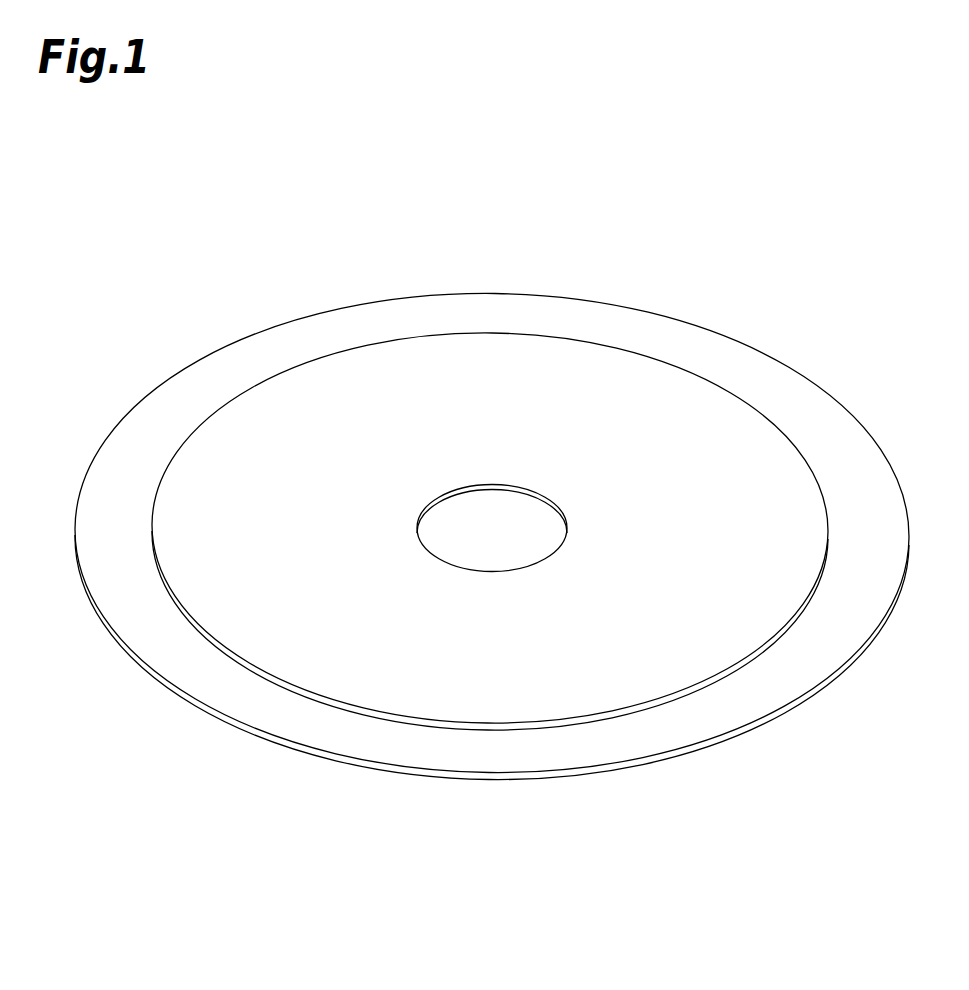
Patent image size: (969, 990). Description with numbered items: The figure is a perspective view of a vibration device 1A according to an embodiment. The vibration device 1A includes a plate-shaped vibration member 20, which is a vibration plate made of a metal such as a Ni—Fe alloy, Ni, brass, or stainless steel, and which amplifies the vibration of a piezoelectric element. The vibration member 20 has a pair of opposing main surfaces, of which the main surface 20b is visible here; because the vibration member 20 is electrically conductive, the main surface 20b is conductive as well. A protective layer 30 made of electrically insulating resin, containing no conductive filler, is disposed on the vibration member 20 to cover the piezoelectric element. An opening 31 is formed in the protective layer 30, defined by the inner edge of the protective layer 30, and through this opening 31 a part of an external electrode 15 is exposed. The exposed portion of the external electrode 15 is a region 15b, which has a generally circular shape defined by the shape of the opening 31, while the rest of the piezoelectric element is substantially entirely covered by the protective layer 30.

The vibration device 1A is at (492, 467).
The vibration member 20 is at (492, 570).
The main surface 20b is at (733, 360).
The protective layer 30 is at (491, 331).
The opening 31 is at (492, 572).
The external electrode 15 is at (456, 528).
The region 15b is at (517, 515).